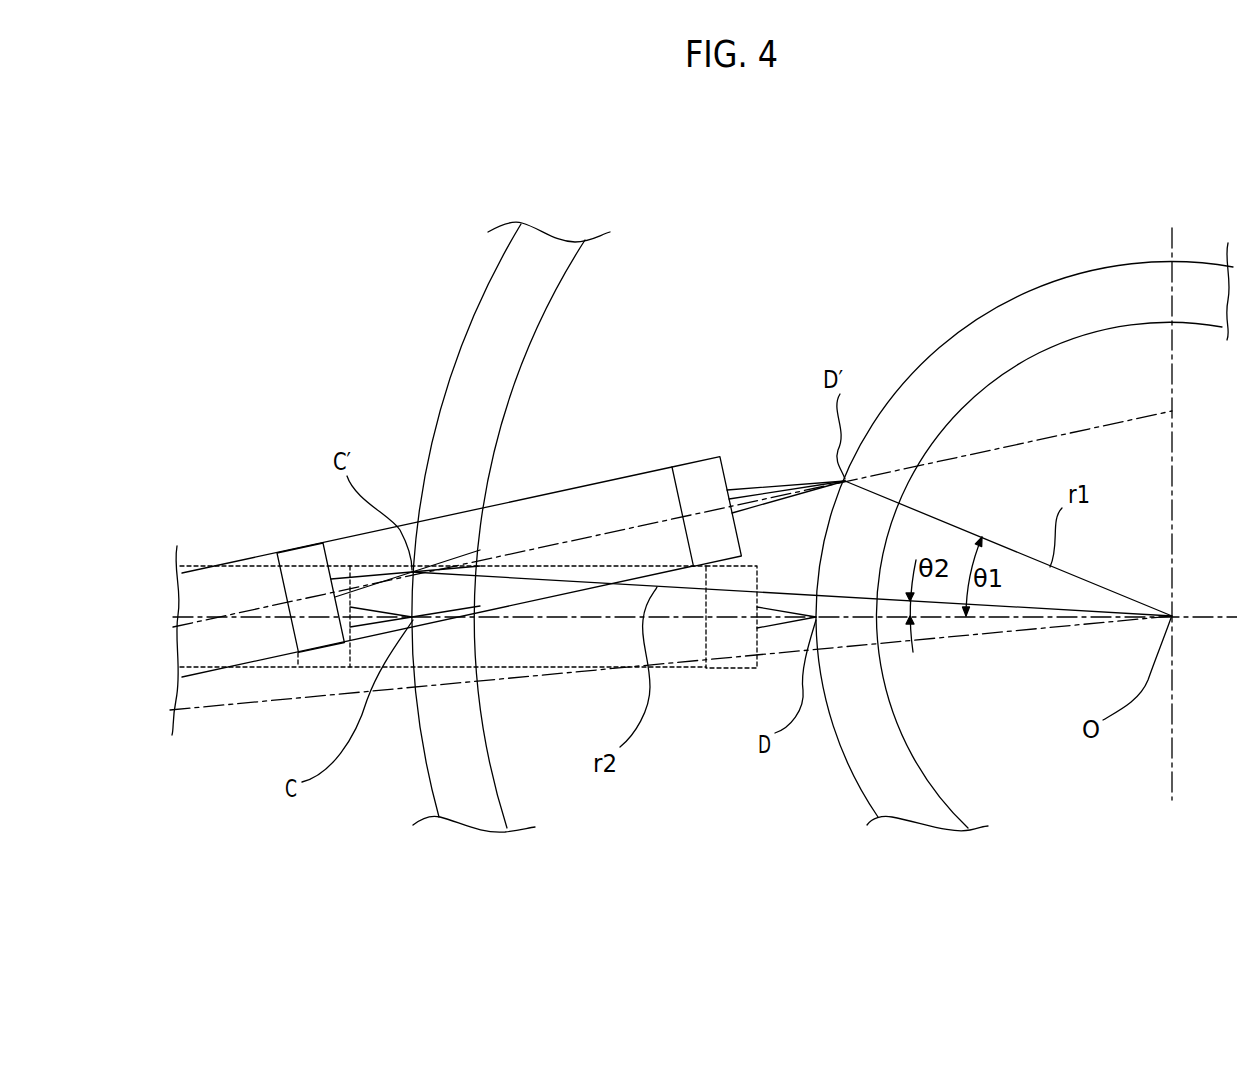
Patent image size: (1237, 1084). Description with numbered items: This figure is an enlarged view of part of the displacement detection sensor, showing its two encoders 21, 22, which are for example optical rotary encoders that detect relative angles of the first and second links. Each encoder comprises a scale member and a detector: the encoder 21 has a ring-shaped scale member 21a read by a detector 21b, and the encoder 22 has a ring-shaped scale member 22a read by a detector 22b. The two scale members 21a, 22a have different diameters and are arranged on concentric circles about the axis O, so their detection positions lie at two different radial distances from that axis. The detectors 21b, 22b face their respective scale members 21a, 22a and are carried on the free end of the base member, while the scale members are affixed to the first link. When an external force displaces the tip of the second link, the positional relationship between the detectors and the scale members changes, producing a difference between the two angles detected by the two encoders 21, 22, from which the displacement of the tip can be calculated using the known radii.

The encoder 21 is at (985, 197).
The scale member 21a is at (992, 360).
The detector 21b is at (716, 452).
The encoder 22 is at (341, 246).
The scale member 22a is at (497, 320).
The detector 22b is at (296, 548).